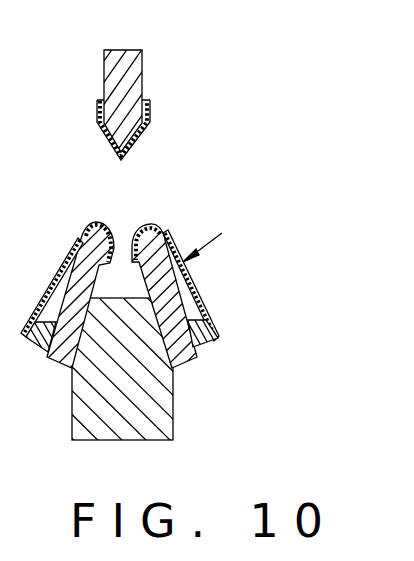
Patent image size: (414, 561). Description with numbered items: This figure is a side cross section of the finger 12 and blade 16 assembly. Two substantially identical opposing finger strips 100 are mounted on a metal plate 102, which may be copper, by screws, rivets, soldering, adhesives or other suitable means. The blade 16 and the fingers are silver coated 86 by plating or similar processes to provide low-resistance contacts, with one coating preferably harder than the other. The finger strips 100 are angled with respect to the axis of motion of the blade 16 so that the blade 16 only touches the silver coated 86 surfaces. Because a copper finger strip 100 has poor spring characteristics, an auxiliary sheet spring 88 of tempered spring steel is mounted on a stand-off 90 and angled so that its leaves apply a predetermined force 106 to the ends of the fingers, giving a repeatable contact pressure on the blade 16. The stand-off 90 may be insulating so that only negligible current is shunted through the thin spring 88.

The finger 12 is at (137, 355).
The blade 16 is at (143, 63).
The silver coating 86 is at (140, 142).
The auxiliary spring 88 is at (210, 311).
The stand-off 90 is at (208, 344).
The finger strip 100 is at (188, 364).
The metal plate 102 is at (173, 419).
The predetermined force 106 is at (222, 240).